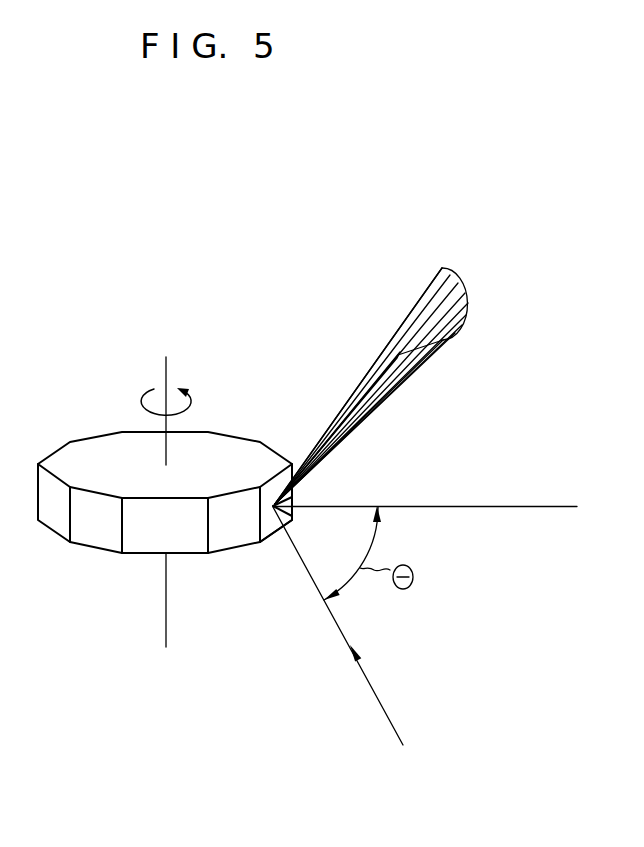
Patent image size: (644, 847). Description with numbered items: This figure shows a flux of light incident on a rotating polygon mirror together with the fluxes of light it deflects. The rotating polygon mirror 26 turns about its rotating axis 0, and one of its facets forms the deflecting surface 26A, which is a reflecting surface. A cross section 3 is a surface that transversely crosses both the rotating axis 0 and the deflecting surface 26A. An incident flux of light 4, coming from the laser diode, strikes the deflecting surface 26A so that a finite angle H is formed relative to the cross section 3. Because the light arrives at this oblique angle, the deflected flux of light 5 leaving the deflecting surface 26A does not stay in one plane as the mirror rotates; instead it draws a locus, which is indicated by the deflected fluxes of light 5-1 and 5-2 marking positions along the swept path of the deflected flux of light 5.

The rotating axis 0 is at (167, 370).
The rotating polygon mirror 26 is at (97, 443).
The deflecting surface 26A is at (268, 535).
The cross section 3 is at (518, 506).
The incident flux of light 4 is at (370, 689).
The deflected flux of light 5 is at (443, 339).
The deflected flux of light 5-1 is at (468, 310).
The deflected flux of light 5-2 is at (442, 268).